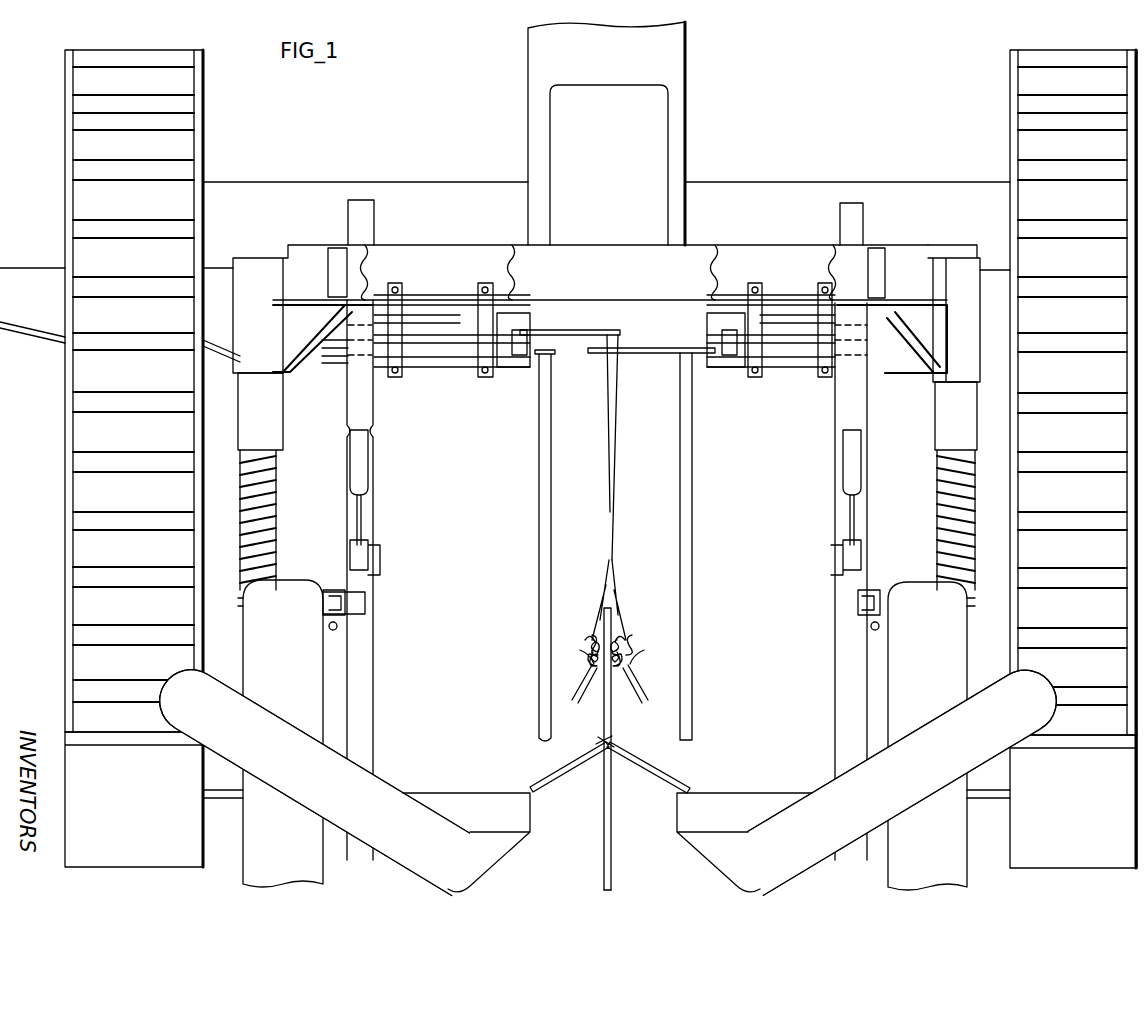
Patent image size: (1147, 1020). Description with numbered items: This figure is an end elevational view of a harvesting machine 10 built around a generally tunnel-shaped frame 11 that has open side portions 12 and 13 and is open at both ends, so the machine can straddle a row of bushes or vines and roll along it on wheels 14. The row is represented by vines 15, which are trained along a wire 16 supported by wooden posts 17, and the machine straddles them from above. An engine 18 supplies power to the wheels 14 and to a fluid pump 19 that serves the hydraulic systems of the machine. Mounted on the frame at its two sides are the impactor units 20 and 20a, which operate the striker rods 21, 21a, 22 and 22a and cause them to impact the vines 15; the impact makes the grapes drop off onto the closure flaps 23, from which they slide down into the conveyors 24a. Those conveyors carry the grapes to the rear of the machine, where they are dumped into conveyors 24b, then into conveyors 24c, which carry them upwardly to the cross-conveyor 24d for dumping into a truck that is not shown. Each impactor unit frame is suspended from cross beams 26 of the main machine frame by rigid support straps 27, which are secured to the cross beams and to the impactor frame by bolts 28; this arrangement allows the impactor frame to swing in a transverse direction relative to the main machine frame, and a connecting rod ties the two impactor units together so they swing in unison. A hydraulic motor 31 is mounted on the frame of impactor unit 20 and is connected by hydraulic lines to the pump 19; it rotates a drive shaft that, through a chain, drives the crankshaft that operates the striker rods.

The harvesting machine 10 is at (838, 100).
The frame 11 is at (418, 181).
The open side portion 12 is at (376, 508).
The open side portion 13 is at (834, 508).
The wheels 14 is at (294, 662).
The vines 15 is at (585, 651).
The wire 16 is at (614, 612).
The wooden posts 17 is at (603, 800).
The engine 18 is at (686, 95).
The fluid pump 19 is at (670, 160).
The impactor unit 20 is at (437, 390).
The impactor unit 20a is at (777, 388).
The striker rod 21 is at (612, 420).
The striker rod 21a is at (680, 500).
The striker rod 22 is at (548, 570).
The striker rod 22a is at (612, 582).
The closure flaps 23 is at (550, 770).
The conveyors 24a is at (485, 793).
The conveyors 24b is at (423, 834).
The conveyors 24c is at (206, 152).
The cross-conveyor 24d is at (37, 270).
The cross beams 26 is at (448, 278).
The rigid support straps 27 is at (400, 372).
The bolts 28 is at (395, 288).
The hydraulic motor 31 is at (350, 396).